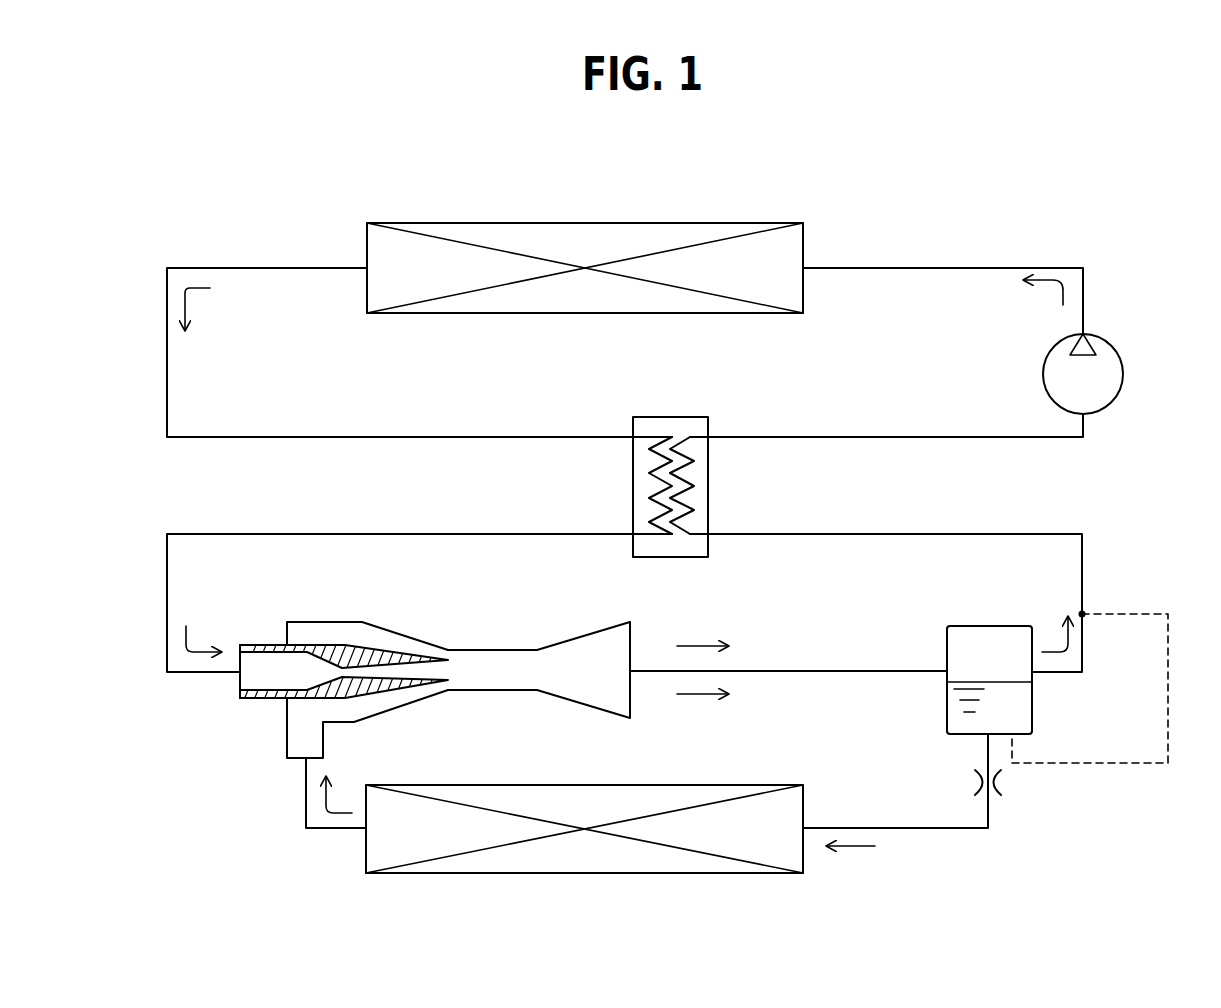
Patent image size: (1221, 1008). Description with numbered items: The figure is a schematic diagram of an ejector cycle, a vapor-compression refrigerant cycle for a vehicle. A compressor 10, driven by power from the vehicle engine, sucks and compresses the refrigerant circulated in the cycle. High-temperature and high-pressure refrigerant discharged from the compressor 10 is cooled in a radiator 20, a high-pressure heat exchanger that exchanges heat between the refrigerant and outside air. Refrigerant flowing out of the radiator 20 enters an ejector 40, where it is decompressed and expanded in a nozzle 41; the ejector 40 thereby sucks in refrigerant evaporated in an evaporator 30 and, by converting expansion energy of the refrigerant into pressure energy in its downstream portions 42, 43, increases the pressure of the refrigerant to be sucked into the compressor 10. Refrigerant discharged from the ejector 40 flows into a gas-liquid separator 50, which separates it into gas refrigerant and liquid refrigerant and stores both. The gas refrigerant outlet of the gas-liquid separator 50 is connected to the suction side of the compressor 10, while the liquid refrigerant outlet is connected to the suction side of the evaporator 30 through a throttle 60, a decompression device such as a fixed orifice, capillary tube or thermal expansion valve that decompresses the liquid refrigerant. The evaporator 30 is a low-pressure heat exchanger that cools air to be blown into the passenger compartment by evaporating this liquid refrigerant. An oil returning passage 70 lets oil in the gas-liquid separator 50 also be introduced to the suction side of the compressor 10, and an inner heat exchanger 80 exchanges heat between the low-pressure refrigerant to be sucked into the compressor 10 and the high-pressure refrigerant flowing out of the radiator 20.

The compressor 10 is at (1123, 373).
The radiator 20 is at (722, 224).
The evaporator 30 is at (750, 785).
The ejector 40 is at (434, 641).
The nozzle 41 is at (368, 650).
The mixing section 42 is at (512, 660).
The diffuser 43 is at (591, 632).
The gas-liquid separator 50 is at (1032, 706).
The throttle 60 is at (1002, 782).
The oil returning passage 70 is at (1140, 763).
The inner heat exchanger 80 is at (708, 483).